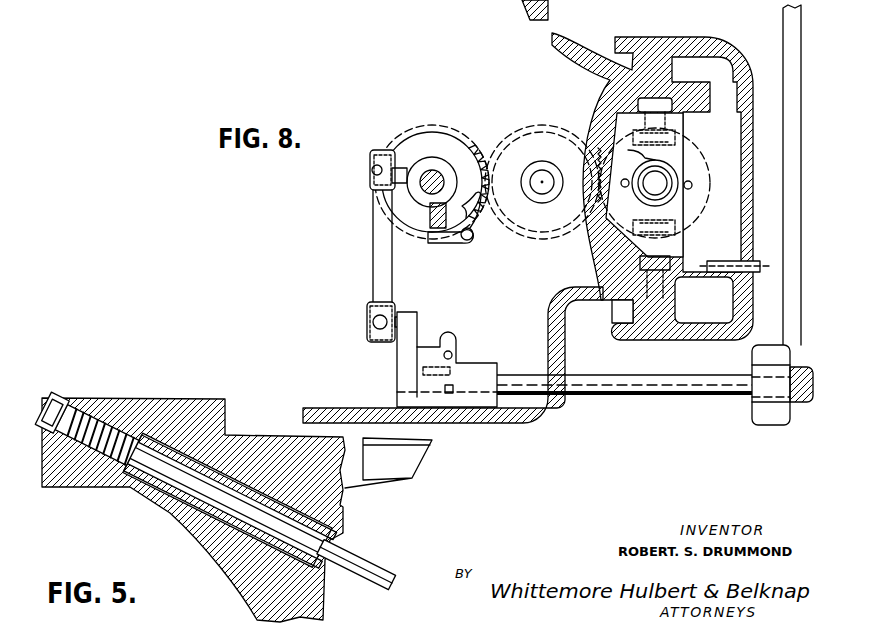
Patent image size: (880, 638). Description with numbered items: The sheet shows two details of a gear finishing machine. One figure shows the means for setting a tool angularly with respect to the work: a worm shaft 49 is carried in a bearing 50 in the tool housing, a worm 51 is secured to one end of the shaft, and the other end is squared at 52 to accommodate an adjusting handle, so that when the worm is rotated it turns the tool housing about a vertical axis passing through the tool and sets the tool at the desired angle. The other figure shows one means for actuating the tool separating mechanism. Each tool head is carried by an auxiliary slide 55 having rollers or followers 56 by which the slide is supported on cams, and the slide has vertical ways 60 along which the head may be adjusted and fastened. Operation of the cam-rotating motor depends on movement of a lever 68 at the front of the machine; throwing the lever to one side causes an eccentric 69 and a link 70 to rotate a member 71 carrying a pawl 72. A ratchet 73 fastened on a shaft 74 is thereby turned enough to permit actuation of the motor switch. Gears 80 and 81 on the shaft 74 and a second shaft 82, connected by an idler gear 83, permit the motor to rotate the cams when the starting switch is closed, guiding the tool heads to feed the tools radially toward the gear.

In FIG. 5, the worm shaft 49 is at (213, 497).
In FIG. 5, the bearing 50 is at (230, 478).
In FIG. 5, the worm 51 is at (108, 423).
In FIG. 5, the squared end 52 is at (363, 557).
In FIG. 8, the auxiliary slide 55 is at (680, 222).
In FIG. 8, the rollers or followers 56 is at (676, 136).
In FIG. 8, the vertical ways 60 is at (652, 68).
In FIG. 8, the lever 68 is at (800, 392).
In FIG. 8, the eccentric 69 is at (407, 380).
In FIG. 8, the link 70 is at (382, 275).
In FIG. 8, the member 71 is at (420, 200).
In FIG. 8, the pawl 72 is at (478, 224).
In FIG. 8, the ratchet 73 is at (462, 158).
In FIG. 8, the shaft 74 is at (434, 178).
In FIG. 8, the gear 80 is at (407, 127).
In FIG. 8, the gear 81 is at (703, 178).
In FIG. 8, the shaft 82 is at (650, 192).
In FIG. 8, the idler gear 83 is at (553, 240).